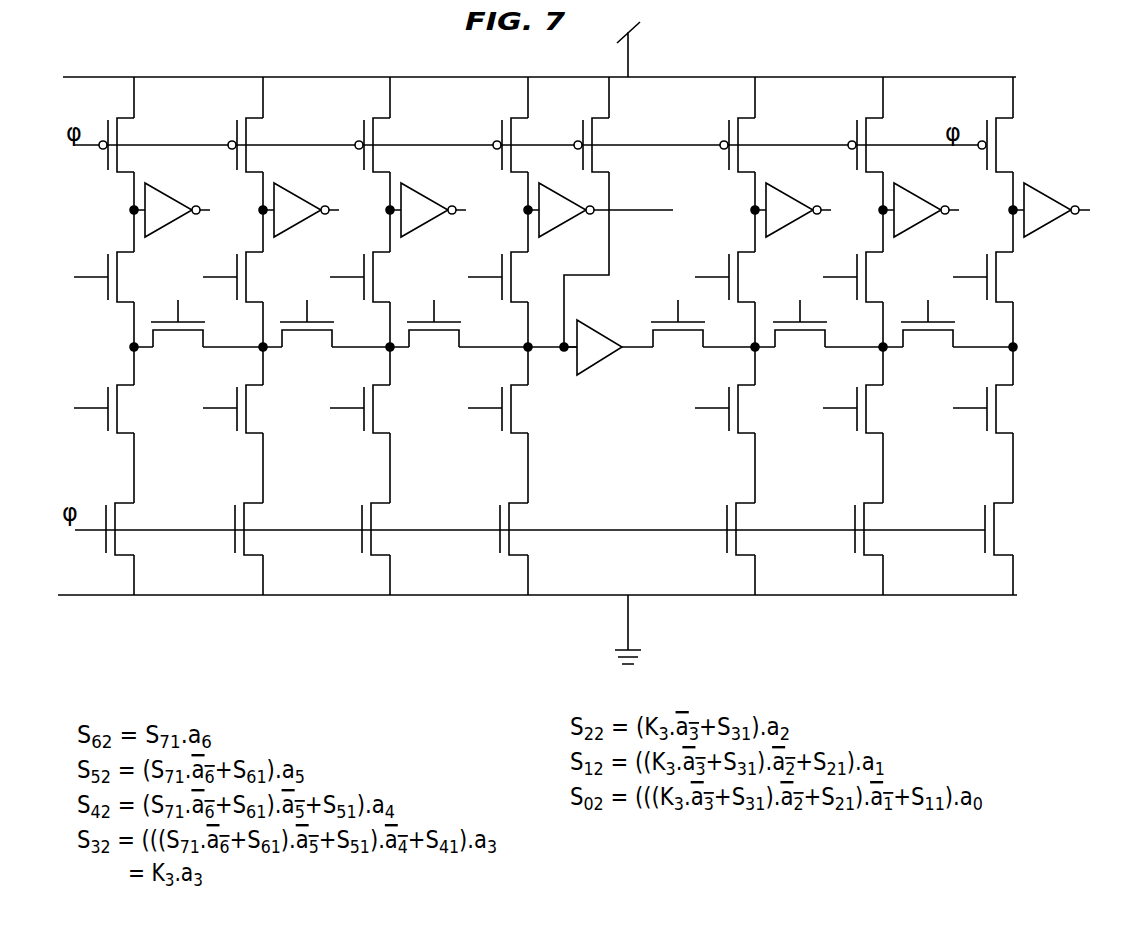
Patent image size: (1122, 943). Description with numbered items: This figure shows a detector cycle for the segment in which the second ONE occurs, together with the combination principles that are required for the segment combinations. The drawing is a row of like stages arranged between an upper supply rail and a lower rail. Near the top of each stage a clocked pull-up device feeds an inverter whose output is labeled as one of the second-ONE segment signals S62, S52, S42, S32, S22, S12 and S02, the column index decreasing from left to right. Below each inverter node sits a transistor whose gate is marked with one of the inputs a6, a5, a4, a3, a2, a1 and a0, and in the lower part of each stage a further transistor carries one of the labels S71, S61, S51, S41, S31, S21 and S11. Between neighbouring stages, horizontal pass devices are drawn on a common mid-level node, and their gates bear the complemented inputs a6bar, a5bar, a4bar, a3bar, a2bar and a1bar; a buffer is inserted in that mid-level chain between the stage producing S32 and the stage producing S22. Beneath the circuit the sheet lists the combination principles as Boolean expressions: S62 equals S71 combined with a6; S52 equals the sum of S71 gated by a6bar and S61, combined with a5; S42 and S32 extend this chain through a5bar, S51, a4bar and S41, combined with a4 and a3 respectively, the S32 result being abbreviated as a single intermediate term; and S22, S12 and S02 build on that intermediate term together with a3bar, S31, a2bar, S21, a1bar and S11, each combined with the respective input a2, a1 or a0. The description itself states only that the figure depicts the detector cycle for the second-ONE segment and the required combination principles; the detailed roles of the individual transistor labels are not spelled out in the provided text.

The NMOS transistor S71 is at (97, 418).
The NMOS transistor S61 is at (226, 418).
The NMOS transistor S51 is at (354, 418).
The NMOS transistor S41 is at (491, 418).
The NMOS transistor S31 is at (719, 417).
The NMOS transistor S21 is at (847, 418).
The NMOS transistor S11 is at (977, 418).
The segment S62 is at (183, 207).
The segment S52 is at (315, 207).
The segment S42 is at (438, 207).
The segment S32 is at (600, 207).
The segment S22 is at (805, 207).
The segment S12 is at (934, 207).
The segment S02 is at (1050, 200).
The input transistor a6 is at (93, 274).
The input transistor a5 is at (223, 272).
The input transistor a4 is at (350, 272).
The input transistor a3 is at (488, 272).
The input transistor a2 is at (718, 271).
The input transistor a1 is at (847, 271).
The input transistor a0 is at (979, 271).
The pass transistor a6-bar a6bar is at (153, 265).
The pass transistor a5-bar a5bar is at (287, 265).
The pass transistor a4-bar a4bar is at (421, 266).
The pass transistor a3-bar a3bar is at (642, 272).
The pass transistor a2-bar a2bar is at (782, 259).
The pass transistor a1-bar a1bar is at (916, 262).